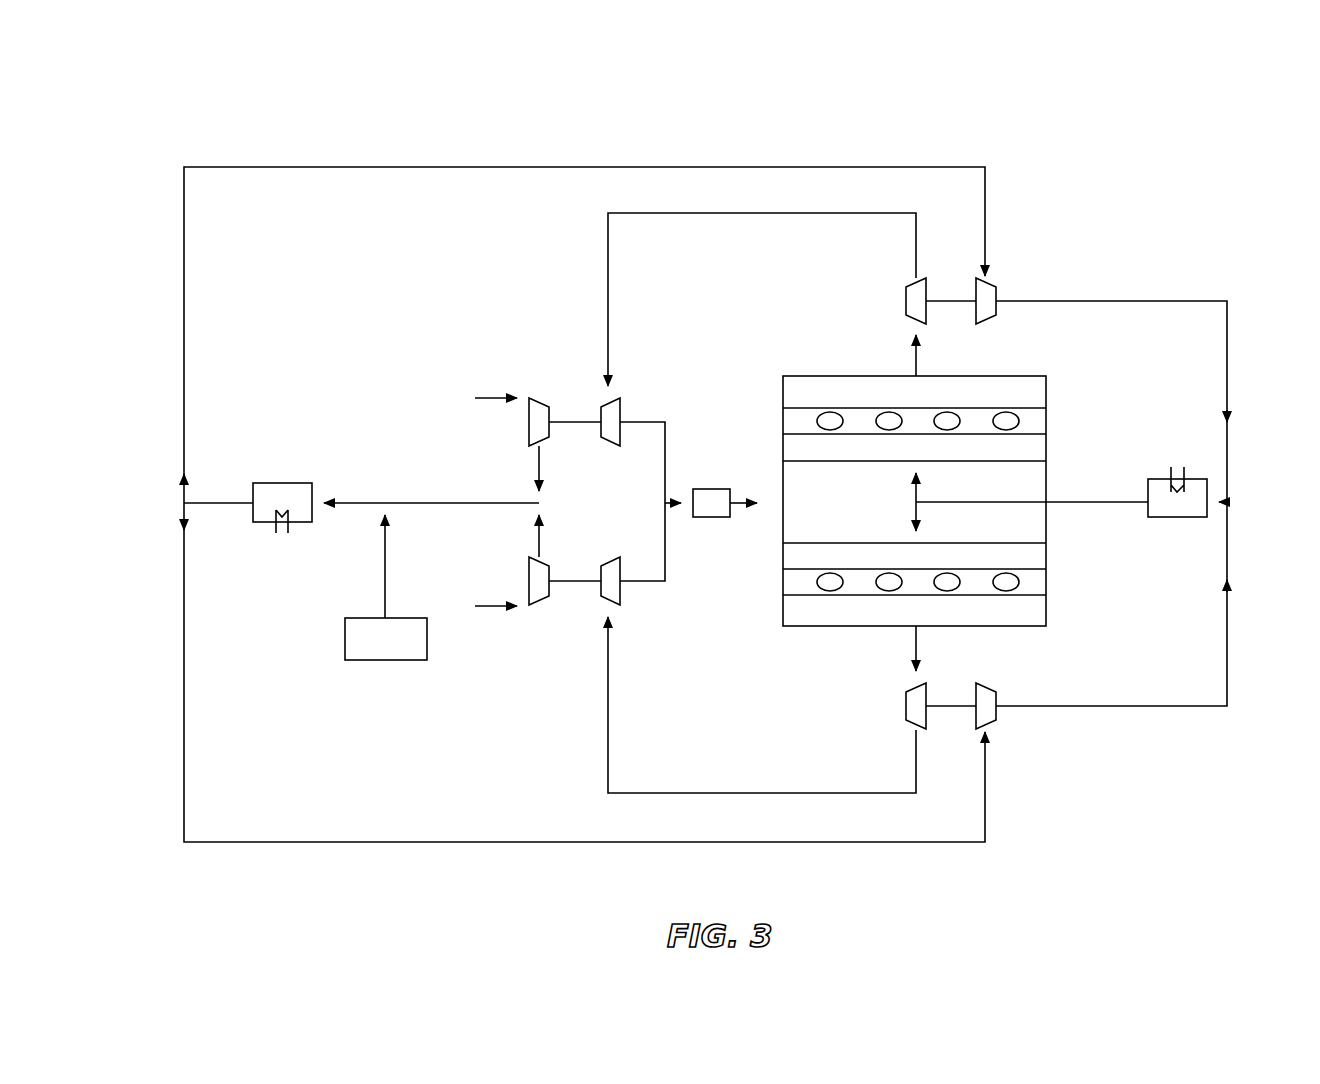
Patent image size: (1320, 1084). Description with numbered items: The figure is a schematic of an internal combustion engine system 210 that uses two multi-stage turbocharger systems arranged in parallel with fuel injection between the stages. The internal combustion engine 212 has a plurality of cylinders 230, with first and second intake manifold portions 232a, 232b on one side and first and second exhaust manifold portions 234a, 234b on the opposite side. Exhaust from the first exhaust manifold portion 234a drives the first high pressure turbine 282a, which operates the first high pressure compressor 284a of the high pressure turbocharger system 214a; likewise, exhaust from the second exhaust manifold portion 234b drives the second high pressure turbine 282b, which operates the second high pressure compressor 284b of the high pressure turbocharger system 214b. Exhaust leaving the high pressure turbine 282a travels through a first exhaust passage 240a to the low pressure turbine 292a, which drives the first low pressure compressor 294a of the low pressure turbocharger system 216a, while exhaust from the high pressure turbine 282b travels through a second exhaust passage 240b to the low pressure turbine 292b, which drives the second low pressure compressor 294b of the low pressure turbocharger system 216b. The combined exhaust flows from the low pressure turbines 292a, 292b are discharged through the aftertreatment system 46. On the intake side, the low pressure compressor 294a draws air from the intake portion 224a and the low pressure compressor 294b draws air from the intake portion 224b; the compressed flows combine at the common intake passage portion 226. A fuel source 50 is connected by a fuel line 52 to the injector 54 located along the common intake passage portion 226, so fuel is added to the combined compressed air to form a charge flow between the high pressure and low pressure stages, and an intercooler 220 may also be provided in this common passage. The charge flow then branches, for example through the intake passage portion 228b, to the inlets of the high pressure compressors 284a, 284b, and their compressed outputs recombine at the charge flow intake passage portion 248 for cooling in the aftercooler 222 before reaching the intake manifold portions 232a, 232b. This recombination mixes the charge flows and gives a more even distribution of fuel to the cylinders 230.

The internal combustion engine system 210 is at (1028, 128).
The internal combustion engine 212 is at (977, 499).
The high pressure turbocharger system 214a is at (979, 249).
The high pressure turbocharger system 214b is at (979, 755).
The low pressure turbocharger system 216a is at (614, 350).
The low pressure turbocharger system 216b is at (607, 669).
The intercooler 220 is at (280, 483).
The aftercooler 222 is at (1178, 517).
The intake portion 224a is at (487, 397).
The intake portion 224b is at (495, 607).
The common intake passage portion 226 is at (457, 503).
The intake passage portion 228b is at (400, 167).
The cylinders 230 is at (1006, 420).
The intake manifold portion 232a is at (914, 447).
The intake manifold portion 232b is at (914, 556).
The exhaust manifold portion 234a is at (914, 393).
The exhaust manifold portion 234b is at (914, 610).
The exhaust passage 240a is at (713, 213).
The exhaust passage 240b is at (737, 793).
The charge flow intake passage portion 248 is at (1100, 502).
The high pressure turbine 282a is at (906, 298).
The high pressure turbine 282b is at (906, 708).
The high pressure compressor 284a is at (996, 290).
The high pressure compressor 284b is at (996, 716).
The low pressure turbine 292a is at (622, 406).
The low pressure turbine 292b is at (622, 600).
The low pressure compressor 294a is at (538, 397).
The low pressure compressor 294b is at (544, 608).
The aftertreatment system 46 is at (713, 488).
The fuel source 50 is at (386, 639).
The fuel line 52 is at (385, 583).
The injector 54 is at (385, 503).